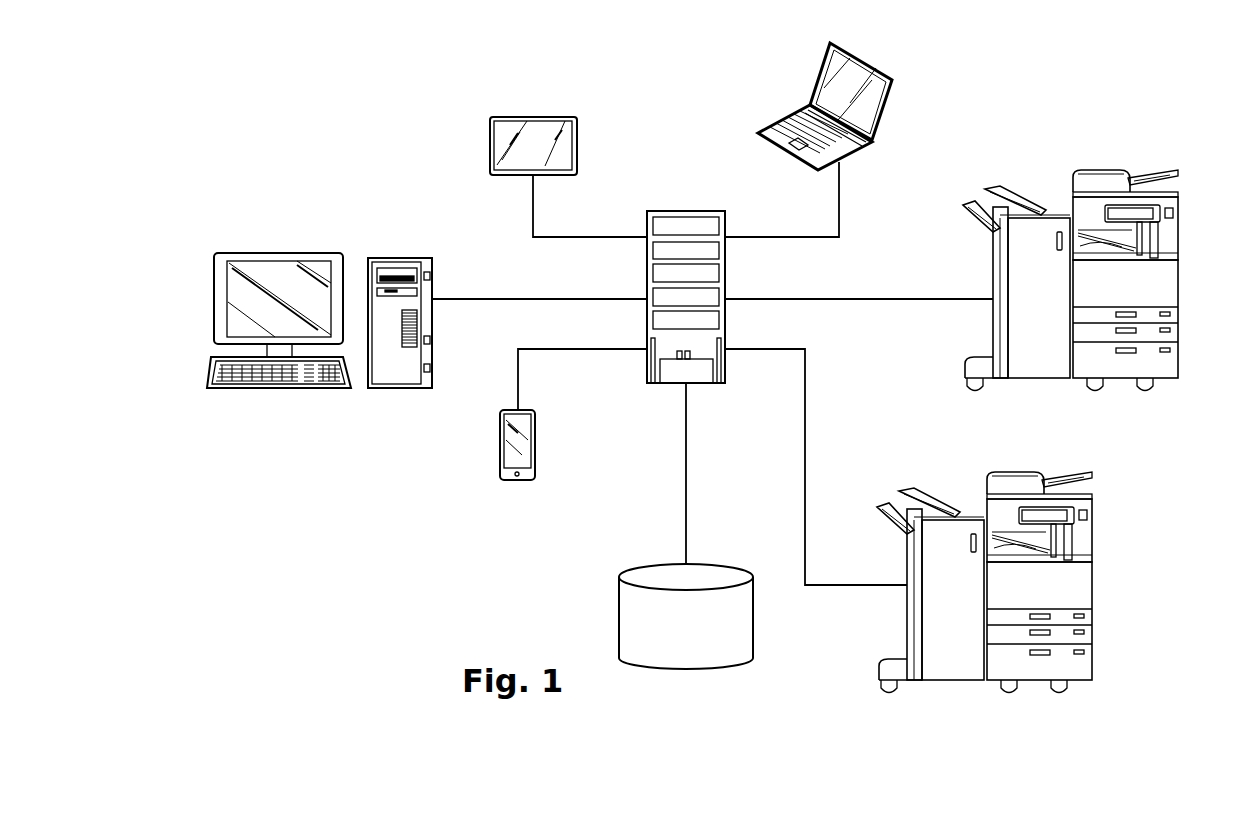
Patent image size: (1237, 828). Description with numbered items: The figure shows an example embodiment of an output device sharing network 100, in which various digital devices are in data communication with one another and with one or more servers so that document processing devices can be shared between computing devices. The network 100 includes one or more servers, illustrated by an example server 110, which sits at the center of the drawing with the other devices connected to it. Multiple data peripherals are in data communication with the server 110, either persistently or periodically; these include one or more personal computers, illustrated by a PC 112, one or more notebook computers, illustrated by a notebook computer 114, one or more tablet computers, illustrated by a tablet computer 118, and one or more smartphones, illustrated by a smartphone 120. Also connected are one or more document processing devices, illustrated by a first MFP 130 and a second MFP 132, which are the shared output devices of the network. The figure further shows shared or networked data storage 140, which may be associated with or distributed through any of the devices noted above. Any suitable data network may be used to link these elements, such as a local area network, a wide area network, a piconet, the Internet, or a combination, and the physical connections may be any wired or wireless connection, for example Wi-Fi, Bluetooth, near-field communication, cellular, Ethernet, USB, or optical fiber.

The output device sharing network 100 is at (208, 196).
The server 110 is at (725, 322).
The PC 112 is at (322, 392).
The notebook computer 114 is at (795, 156).
The tablet computer 118 is at (490, 136).
The smartphone 120 is at (500, 452).
The MFP 130 is at (1145, 392).
The MFP 132 is at (1092, 590).
The shared or networked data storage 140 is at (720, 668).